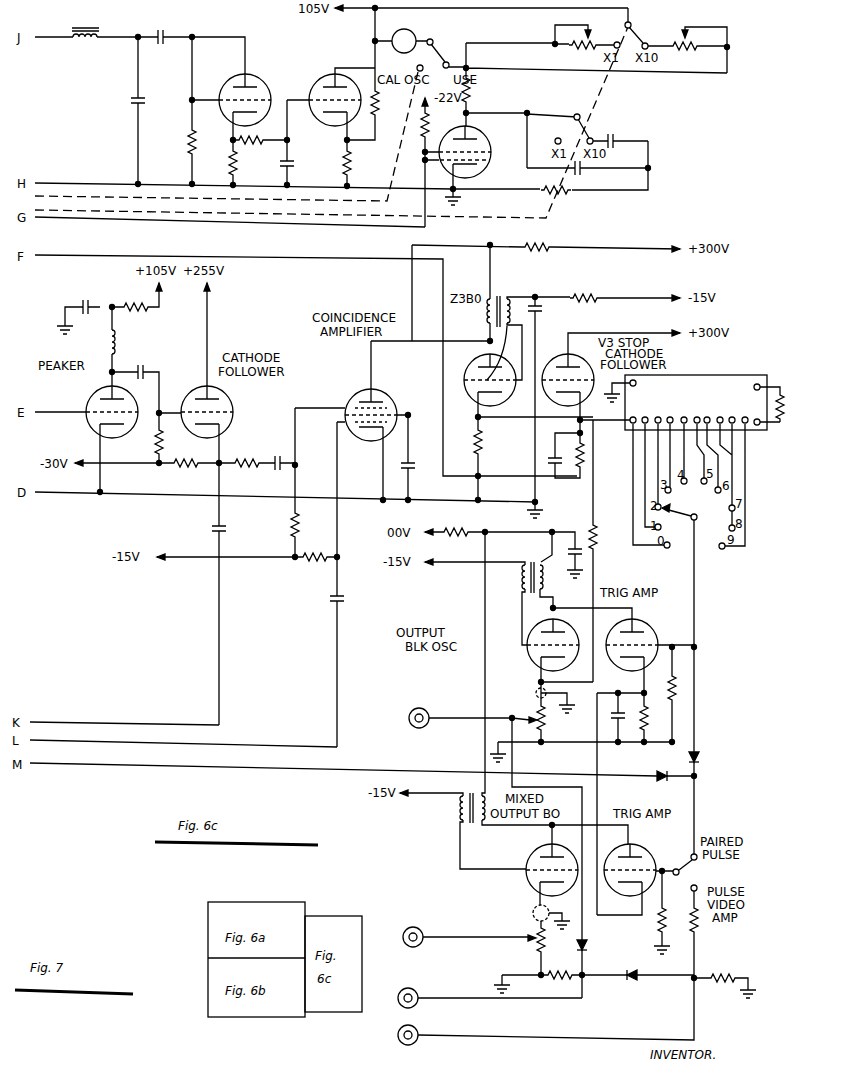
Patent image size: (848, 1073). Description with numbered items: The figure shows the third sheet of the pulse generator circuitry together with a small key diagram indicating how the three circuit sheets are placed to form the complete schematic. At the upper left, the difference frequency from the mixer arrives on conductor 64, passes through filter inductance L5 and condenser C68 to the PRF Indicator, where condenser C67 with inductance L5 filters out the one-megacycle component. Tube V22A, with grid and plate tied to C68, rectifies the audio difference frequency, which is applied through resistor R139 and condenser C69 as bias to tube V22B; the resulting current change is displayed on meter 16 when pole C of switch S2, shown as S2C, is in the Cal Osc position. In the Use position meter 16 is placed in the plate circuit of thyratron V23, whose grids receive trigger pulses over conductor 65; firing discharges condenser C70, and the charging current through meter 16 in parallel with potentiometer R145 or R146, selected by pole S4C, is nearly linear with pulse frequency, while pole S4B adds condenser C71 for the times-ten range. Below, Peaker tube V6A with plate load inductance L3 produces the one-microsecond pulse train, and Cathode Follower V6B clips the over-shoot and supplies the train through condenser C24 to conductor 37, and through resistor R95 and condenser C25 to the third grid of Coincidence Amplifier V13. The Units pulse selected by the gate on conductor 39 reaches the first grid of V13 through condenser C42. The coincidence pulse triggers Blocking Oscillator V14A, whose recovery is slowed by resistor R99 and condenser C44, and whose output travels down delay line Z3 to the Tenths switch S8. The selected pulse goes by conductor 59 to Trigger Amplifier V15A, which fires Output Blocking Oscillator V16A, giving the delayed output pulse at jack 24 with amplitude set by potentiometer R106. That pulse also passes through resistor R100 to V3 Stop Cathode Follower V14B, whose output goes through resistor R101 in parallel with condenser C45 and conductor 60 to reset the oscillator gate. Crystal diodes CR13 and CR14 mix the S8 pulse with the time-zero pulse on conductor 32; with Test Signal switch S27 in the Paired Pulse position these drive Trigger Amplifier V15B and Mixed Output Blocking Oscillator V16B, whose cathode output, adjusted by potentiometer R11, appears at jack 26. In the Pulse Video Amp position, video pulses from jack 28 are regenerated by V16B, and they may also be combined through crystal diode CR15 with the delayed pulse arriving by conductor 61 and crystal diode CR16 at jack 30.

The conductor 64 is at (65, 39).
The filter inductance L5 is at (94, 40).
The condenser C68 is at (160, 44).
The condenser C67 is at (131, 100).
The PRF Indicator tube V22A is at (265, 73).
The PRF Indicator tube V22B is at (323, 93).
The resistor R139 is at (251, 157).
The condenser C69 is at (292, 164).
The PRF meter 16 is at (418, 36).
The pole C of switch S2 S2C is at (452, 37).
The thyratron tube V23 is at (477, 139).
The potentiometer R145 is at (580, 50).
The pole C of PRF–Coarse adjust switch S4 S4C is at (640, 30).
The potentiometer R146 is at (698, 54).
The pole B of PRF–Coarse adjust switch S4 S4B is at (588, 133).
The condenser C71 is at (616, 139).
The condenser C70 is at (582, 173).
The conductor 65 is at (95, 221).
The conductor 60 is at (153, 255).
The plate load inductance L3 is at (116, 330).
The Peaker tube V6A is at (90, 395).
The Cathode Follower tube V6B is at (230, 405).
The resistor R95 is at (260, 458).
The condenser C25 is at (280, 469).
The condenser C24 is at (224, 527).
The condenser C42 is at (344, 598).
The Coincidence Amplifier tube V13 is at (362, 393).
The condenser C44 is at (538, 312).
The resistor R99 is at (590, 286).
The Blocking Oscillator tube V14A is at (470, 365).
The V3 Stop Cathode Follower tube V14B is at (570, 351).
The resistor R101 is at (577, 447).
The condenser C45 is at (554, 476).
The high-fidelity delay line Z3 is at (723, 373).
The Tenths switch S8 is at (676, 512).
The conductor 59 is at (697, 606).
The resistor R100 is at (596, 540).
The Output Blocking Oscillator tube V16A is at (530, 660).
The Trigger Amplifier tube V15A is at (648, 633).
The potentiometer R106 is at (520, 690).
The output jack 24 is at (427, 711).
The conductor 61 is at (526, 786).
The crystal diode CR13 is at (664, 771).
The crystal diode CR14 is at (698, 755).
The conductor 37 is at (140, 724).
The conductor 39 is at (241, 747).
The conductor 32 is at (337, 770).
The Mixed Output Blocking Oscillator tube V16B is at (530, 849).
The Trigger Amplifier tube V15B is at (643, 852).
The potentiometer R11 is at (535, 930).
The jack 26 is at (423, 930).
The crystal diode CR16 is at (587, 946).
The jack 30 is at (418, 992).
The crystal diode CR15 is at (630, 982).
The jack 28 is at (416, 1043).
The Test Signal switch S27 is at (686, 872).